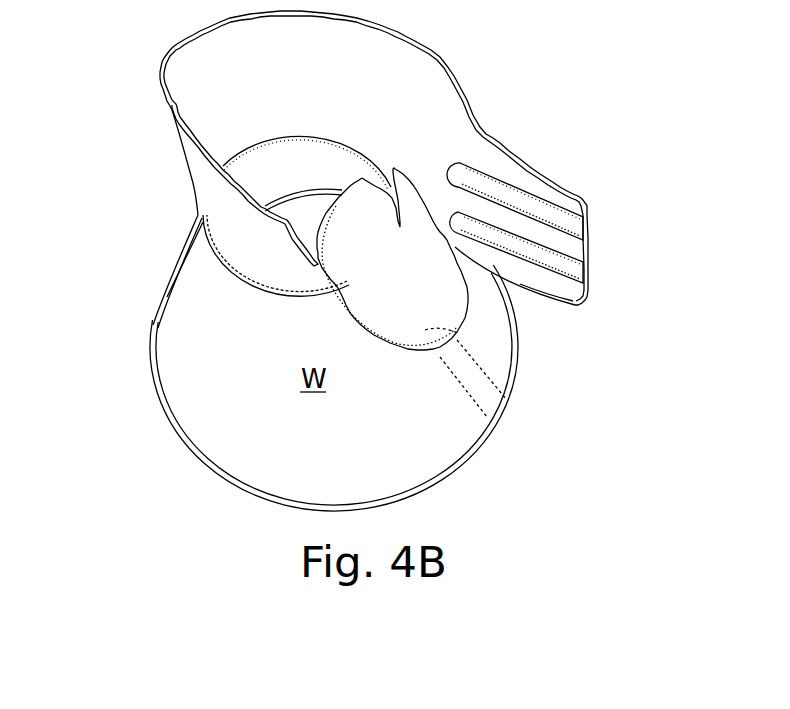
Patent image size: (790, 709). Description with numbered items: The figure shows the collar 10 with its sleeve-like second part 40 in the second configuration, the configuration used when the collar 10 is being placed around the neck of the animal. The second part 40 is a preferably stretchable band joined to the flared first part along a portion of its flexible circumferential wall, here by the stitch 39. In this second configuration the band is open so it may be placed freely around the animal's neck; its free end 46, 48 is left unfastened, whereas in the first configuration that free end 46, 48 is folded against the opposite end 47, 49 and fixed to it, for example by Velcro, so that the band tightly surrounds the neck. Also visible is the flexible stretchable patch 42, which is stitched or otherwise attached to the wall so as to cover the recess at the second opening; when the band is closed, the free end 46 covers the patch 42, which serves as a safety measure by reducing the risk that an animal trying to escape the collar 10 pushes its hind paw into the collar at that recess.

The collar 10 is at (499, 478).
The stitch 39 is at (190, 238).
The second part 40 is at (507, 106).
The patch 42 is at (460, 333).
The free end 46 is at (585, 198).
The free end 48 is at (593, 276).
The opposite end 47 is at (220, 178).
The opposite end 49 is at (227, 221).